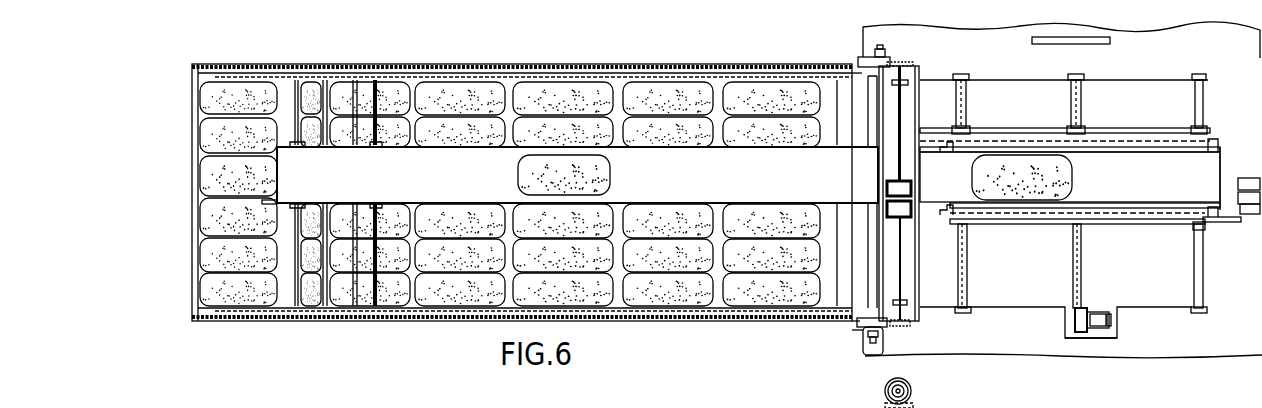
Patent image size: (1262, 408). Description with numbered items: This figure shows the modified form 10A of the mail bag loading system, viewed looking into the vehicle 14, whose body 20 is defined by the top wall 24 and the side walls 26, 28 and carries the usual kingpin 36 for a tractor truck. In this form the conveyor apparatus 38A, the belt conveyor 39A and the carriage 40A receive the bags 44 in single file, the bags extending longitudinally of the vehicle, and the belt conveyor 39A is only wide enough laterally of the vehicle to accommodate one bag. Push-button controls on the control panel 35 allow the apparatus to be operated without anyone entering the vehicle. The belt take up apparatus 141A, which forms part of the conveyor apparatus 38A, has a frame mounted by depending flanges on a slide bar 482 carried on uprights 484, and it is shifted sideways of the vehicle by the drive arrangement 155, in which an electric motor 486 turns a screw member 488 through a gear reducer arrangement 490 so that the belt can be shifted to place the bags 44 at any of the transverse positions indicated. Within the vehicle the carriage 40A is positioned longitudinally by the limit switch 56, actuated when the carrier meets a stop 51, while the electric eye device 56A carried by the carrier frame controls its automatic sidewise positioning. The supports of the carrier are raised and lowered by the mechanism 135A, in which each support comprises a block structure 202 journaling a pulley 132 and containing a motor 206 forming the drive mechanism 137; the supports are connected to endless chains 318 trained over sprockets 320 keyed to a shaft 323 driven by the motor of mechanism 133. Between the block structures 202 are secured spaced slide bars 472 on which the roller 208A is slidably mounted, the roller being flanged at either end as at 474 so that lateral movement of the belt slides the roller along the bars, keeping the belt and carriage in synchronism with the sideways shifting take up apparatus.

The modified form 10A is at (154, 198).
The vehicle 14 is at (809, 403).
The body 20 is at (762, 407).
The top wall 24 is at (556, 407).
The side wall 26 is at (689, 405).
The side wall 28 is at (631, 407).
The control panel 35 is at (1083, 38).
The kingpin 36 is at (918, 41).
The conveyor apparatus 38A is at (1152, 310).
The belt conveyor 39A is at (1183, 165).
The carriage 40A is at (427, 321).
The bag 44 is at (612, 178).
The stop 51 is at (242, 277).
The limit switch 56 is at (283, 284).
The electric eye device 56A is at (271, 119).
The pulley 132 is at (857, 320).
The mechanism 133 is at (913, 393).
The mechanism 135A is at (926, 67).
The drive mechanism 137 is at (856, 341).
The belt take up apparatus 141A is at (1011, 247).
The drive arrangement 155 is at (1085, 346).
The block structure 202 is at (857, 330).
The motor 206 is at (877, 358).
The roller 208A is at (862, 147).
The endless chain 318 is at (904, 328).
The sprocket 320 is at (912, 386).
The shaft 323 is at (900, 251).
The slide bar 472 is at (867, 107).
The flange 474 is at (866, 205).
The slide bar 482 is at (1198, 266).
The upright 484 is at (1199, 78).
The motor 486 is at (1099, 330).
The screw member 488 is at (1079, 270).
The gear reducer arrangement 490 is at (1078, 312).